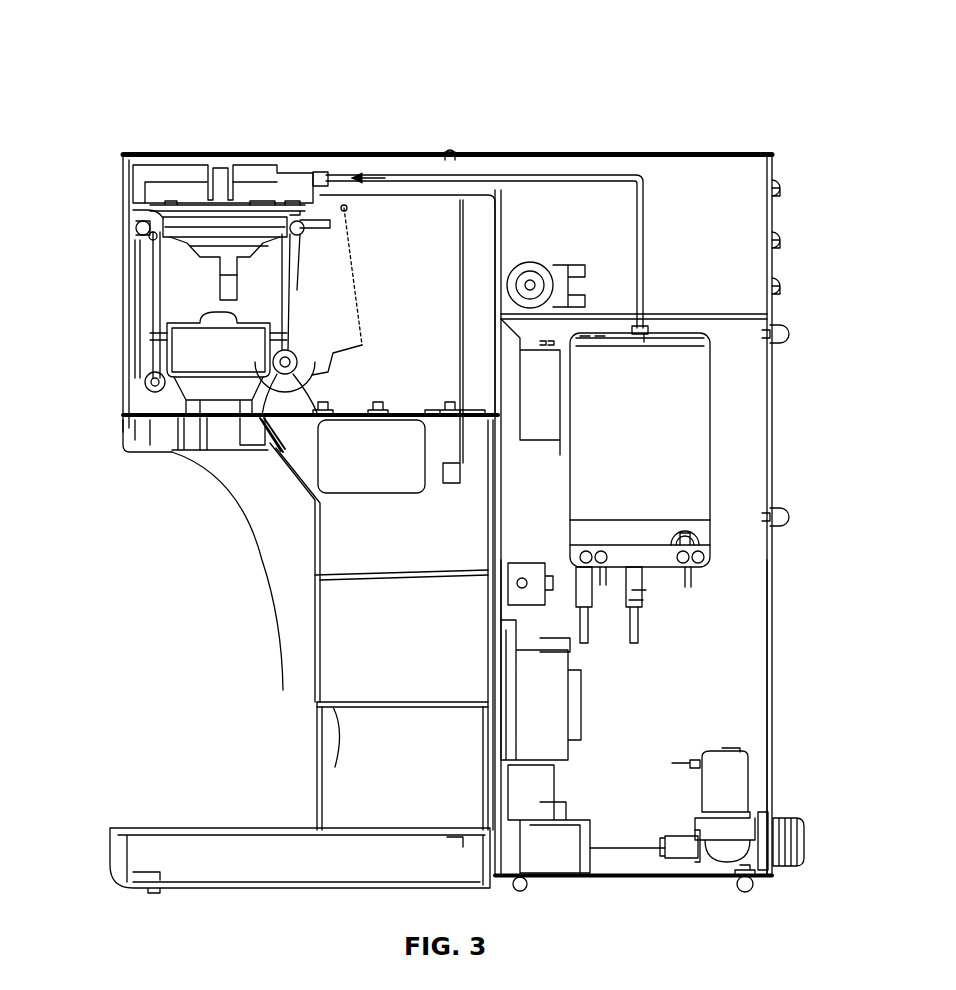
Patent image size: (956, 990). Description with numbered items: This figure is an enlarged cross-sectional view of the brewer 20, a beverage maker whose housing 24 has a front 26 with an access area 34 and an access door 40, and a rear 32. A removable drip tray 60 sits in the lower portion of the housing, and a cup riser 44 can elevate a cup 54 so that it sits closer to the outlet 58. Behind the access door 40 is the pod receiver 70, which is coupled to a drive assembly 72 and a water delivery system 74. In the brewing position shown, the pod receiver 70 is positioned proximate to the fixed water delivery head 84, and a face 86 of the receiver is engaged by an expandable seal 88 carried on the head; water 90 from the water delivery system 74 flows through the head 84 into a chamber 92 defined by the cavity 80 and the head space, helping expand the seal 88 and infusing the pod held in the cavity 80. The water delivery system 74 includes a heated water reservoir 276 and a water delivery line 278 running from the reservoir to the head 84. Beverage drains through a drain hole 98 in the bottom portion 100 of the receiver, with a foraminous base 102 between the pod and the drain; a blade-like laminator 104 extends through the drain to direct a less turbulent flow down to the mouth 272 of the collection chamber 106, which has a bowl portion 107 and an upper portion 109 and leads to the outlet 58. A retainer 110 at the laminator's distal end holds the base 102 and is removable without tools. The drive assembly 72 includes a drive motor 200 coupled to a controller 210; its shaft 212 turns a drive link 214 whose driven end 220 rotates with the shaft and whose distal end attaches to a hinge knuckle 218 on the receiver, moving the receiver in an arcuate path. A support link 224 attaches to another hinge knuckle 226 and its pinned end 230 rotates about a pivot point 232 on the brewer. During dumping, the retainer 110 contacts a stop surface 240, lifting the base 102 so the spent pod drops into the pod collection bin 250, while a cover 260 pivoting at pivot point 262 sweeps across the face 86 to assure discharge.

The brewer 20 is at (730, 48).
The housing 24 is at (806, 772).
The front 26 is at (112, 656).
The rear 32 is at (778, 565).
The access area 34 is at (165, 772).
The access door 40 is at (160, 350).
The cup riser 44 is at (340, 808).
The cup 54 is at (342, 710).
The outlet 58 is at (212, 422).
The drip tray 60 is at (112, 858).
The pod receiver 70 is at (138, 215).
The drive assembly 72 is at (301, 422).
The water delivery system 74 is at (683, 183).
The cavity 80 is at (262, 205).
The water delivery head 84 is at (197, 178).
The face 86 is at (265, 205).
The expandable seal 88 is at (292, 202).
The water 90 is at (380, 175).
The chamber 92 is at (136, 211).
The drain hole 98 is at (238, 258).
The bottom portion 100 is at (148, 272).
The foraminous base 102 is at (197, 226).
The laminator 104 is at (208, 242).
The collection chamber 106 is at (155, 340).
The bowl portion 107 is at (177, 420).
The upper portion 109 is at (155, 312).
The retainer 110 is at (218, 344).
The drive motor 200 is at (322, 385).
The controller 210 is at (578, 672).
The shaft 212 is at (294, 374).
The drive link 214 is at (300, 250).
The hinge knuckle 218 is at (325, 222).
The driven end 220 is at (277, 392).
The support link 224 is at (137, 290).
The hinge knuckle 226 is at (138, 232).
The pinned end 230 is at (146, 376).
The pivot point 232 is at (150, 418).
The stop surface 240 is at (270, 448).
The pod collection bin 250 is at (316, 648).
The cover 260 is at (353, 270).
The pivot point 262 is at (347, 208).
The mouth 272 is at (207, 330).
The heated water reservoir 276 is at (690, 405).
The water delivery line 278 is at (590, 172).